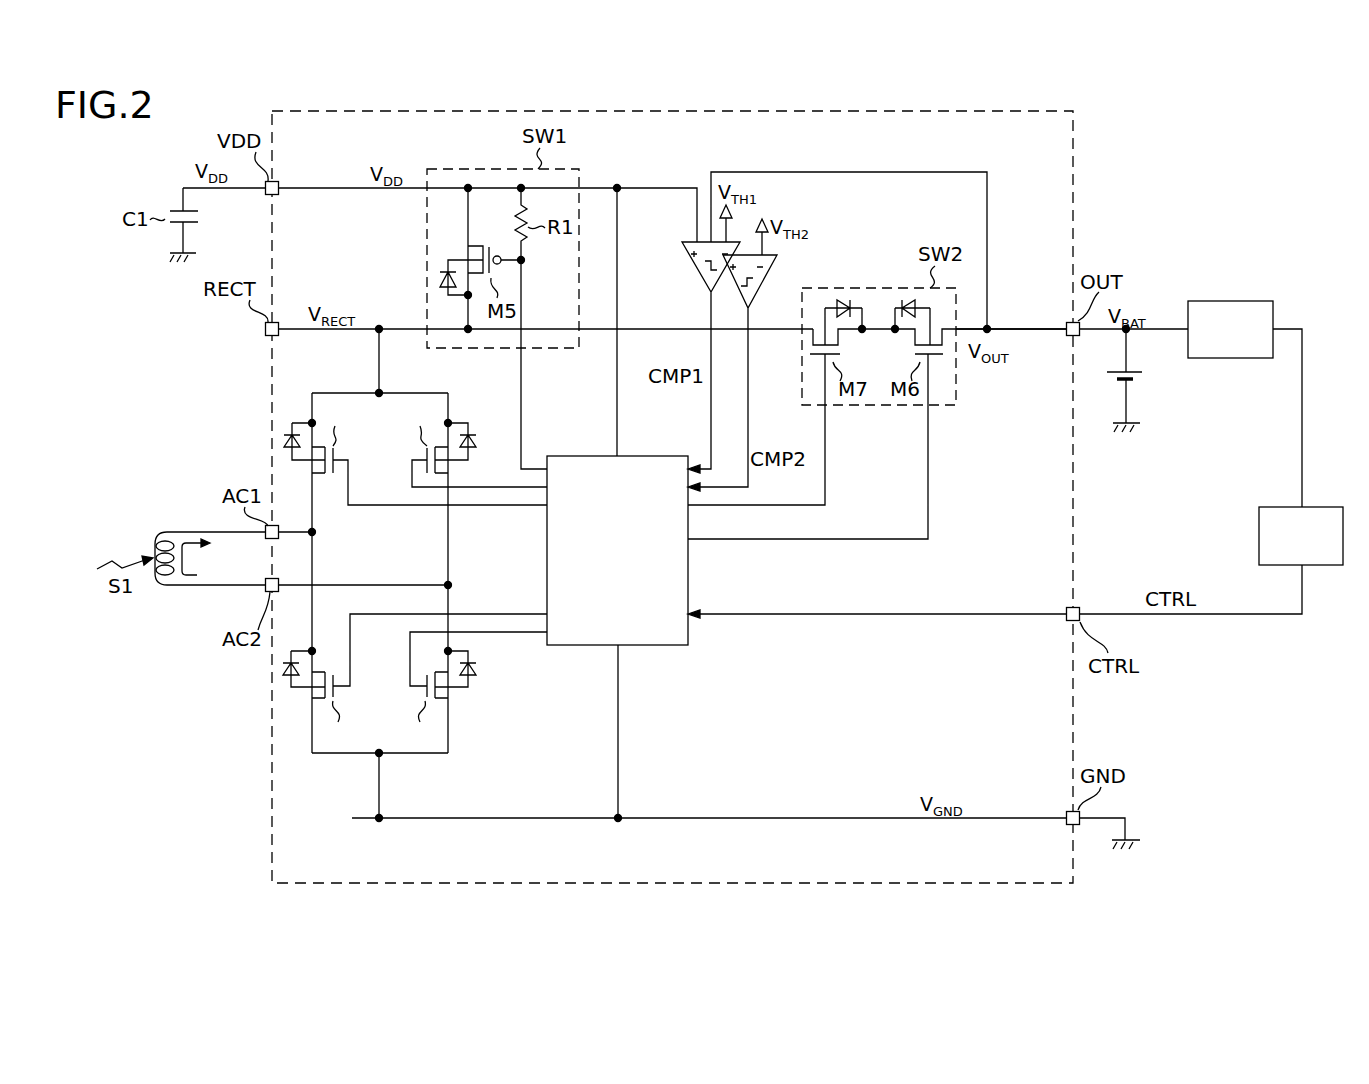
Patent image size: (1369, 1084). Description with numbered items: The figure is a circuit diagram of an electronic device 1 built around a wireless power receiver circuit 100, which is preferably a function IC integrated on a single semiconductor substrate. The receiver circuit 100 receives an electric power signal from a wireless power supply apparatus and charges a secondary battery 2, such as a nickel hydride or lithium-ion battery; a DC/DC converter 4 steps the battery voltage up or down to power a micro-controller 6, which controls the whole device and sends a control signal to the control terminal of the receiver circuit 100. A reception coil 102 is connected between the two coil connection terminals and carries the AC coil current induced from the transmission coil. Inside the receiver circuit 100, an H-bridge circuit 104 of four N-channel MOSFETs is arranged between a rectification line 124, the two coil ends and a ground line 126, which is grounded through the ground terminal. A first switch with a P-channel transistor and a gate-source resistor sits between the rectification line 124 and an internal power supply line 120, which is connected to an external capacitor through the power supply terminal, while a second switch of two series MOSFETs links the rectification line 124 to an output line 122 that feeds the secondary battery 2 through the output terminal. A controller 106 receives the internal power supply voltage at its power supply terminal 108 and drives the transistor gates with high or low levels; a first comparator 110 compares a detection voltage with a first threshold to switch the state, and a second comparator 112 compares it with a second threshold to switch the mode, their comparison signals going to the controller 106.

The electronic device 1 is at (733, 915).
The secondary battery 2 is at (1148, 379).
The DC/DC converter 4 is at (1241, 301).
The micro-controller 6 is at (1318, 507).
The wireless power receiver circuit 100 is at (800, 111).
The reception coil 102 is at (167, 592).
The H-bridge circuit 104 is at (478, 826).
The controller 106 is at (688, 632).
The power supply terminal 108 is at (668, 432).
The first comparator 110 is at (690, 271).
The second comparator 112 is at (777, 268).
The internal power supply line 120 is at (323, 186).
The output line 122 is at (1030, 328).
The rectification line 124 is at (306, 333).
The ground line 126 is at (680, 820).